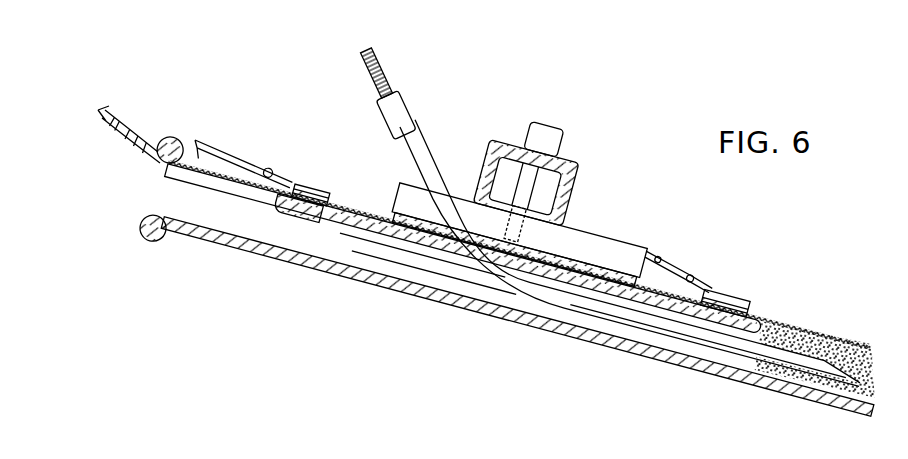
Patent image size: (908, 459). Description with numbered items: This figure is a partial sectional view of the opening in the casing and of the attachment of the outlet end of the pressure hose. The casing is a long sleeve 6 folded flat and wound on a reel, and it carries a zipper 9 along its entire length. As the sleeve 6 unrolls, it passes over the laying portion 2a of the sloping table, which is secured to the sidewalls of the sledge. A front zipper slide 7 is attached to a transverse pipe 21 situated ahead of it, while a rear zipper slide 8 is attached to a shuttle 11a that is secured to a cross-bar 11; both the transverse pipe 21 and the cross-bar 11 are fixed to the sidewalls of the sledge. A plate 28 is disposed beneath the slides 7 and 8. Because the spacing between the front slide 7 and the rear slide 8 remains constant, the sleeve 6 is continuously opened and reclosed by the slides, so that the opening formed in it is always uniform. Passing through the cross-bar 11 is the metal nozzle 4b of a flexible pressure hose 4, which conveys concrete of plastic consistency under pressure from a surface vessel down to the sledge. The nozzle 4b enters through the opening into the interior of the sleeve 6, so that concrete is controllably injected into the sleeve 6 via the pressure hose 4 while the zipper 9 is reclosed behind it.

The laying portion 2a is at (378, 274).
The flexible pressure hose 4 is at (385, 78).
The metal nozzle 4b is at (814, 363).
The sleeve 6 is at (113, 117).
The front zipper slide 7 is at (297, 183).
The rear zipper slide 8 is at (737, 289).
The zipper 9 is at (806, 324).
The cross-bar 11 is at (500, 142).
The shuttle 11a is at (620, 247).
The transverse pipe 21 is at (169, 137).
The plate 28 is at (305, 216).